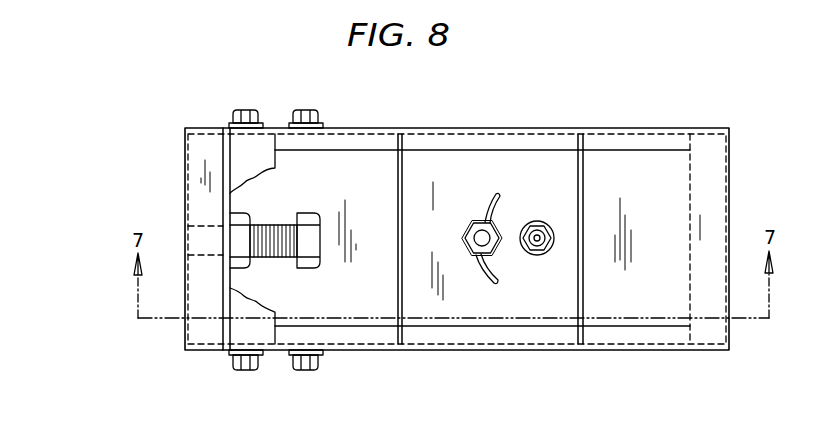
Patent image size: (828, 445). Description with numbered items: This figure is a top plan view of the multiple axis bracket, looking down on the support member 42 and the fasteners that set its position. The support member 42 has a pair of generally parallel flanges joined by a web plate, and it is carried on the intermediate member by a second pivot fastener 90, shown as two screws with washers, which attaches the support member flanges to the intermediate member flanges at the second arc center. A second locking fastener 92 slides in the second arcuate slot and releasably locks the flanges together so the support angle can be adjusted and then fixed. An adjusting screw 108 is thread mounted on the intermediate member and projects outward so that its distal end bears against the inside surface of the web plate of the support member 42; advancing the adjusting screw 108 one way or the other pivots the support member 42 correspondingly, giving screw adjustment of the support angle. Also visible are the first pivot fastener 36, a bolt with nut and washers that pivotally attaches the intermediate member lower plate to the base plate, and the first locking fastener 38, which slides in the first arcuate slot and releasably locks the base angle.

The support member 42 is at (185, 153).
The second pivot fastener 90 is at (245, 108).
The second locking fastener 92 is at (302, 108).
The adjusting screw 108 is at (276, 224).
The first locking fastener 38 is at (465, 245).
The first pivot fastener 36 is at (530, 222).